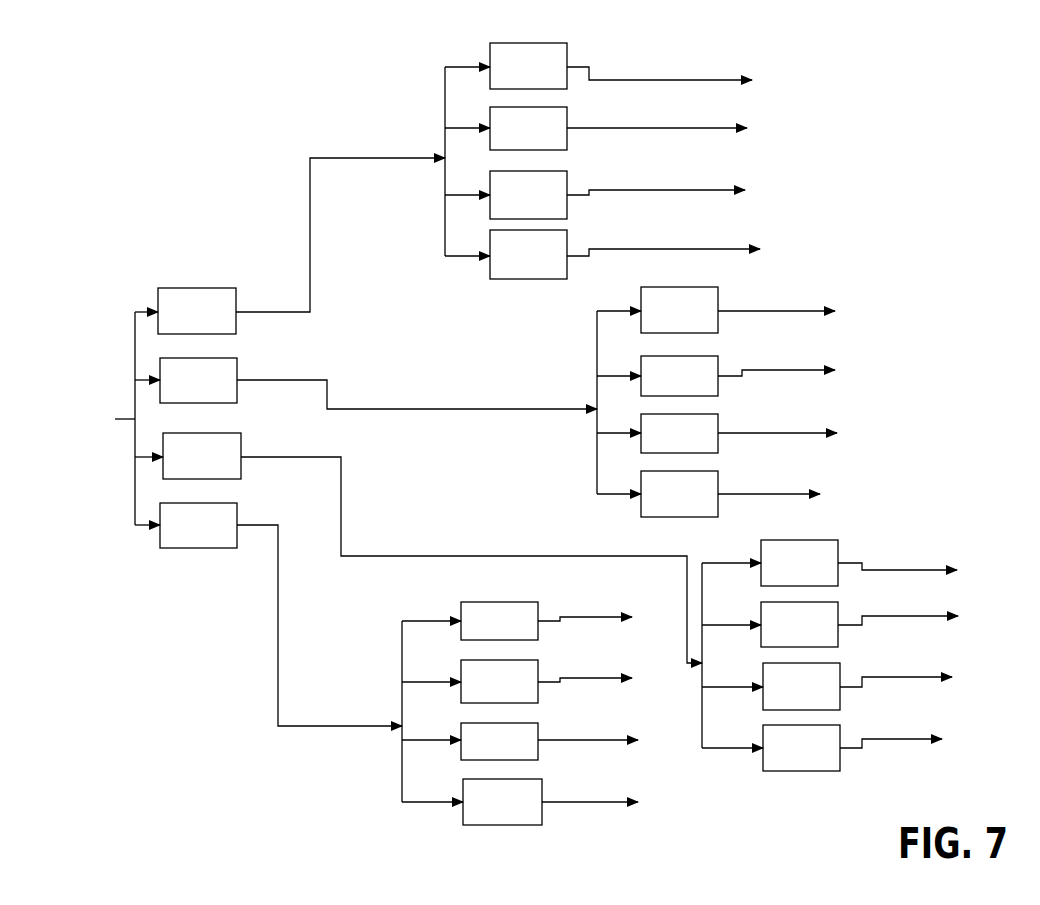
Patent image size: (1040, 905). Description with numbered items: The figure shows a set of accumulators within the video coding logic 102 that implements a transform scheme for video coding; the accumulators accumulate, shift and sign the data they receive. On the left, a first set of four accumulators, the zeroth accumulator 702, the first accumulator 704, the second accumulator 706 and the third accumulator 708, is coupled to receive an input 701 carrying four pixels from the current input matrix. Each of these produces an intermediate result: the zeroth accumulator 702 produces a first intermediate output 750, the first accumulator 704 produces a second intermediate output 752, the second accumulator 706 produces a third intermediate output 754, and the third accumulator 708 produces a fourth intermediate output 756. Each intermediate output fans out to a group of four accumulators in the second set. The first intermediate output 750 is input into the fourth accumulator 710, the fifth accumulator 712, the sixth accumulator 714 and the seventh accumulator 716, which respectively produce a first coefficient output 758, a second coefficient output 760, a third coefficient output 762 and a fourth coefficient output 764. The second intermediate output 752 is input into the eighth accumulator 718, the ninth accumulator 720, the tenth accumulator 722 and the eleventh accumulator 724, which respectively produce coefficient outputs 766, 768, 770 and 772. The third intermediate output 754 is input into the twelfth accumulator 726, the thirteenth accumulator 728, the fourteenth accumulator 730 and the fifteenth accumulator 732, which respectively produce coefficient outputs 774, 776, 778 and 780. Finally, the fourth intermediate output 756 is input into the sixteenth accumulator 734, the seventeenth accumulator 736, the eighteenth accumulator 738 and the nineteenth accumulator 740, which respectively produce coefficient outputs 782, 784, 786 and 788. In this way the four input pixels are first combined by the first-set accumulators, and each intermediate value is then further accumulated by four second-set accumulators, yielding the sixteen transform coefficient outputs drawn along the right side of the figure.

The video coding logic 102 is at (992, 113).
The input 701 is at (80, 334).
The accumulator Acc0 702 is at (203, 288).
The accumulator Acc1 704 is at (200, 357).
The accumulator Acc2 706 is at (205, 433).
The accumulator Acc3 708 is at (200, 548).
The accumulator Acc4 710 is at (527, 43).
The accumulator Acc5 712 is at (533, 107).
The accumulator Acc6 714 is at (533, 171).
The accumulator Acc7 716 is at (530, 280).
The accumulator Acc8 718 is at (681, 287).
The accumulator Acc9 720 is at (683, 356).
The accumulator Acc10 722 is at (683, 414).
The accumulator Acc11 724 is at (683, 517).
The accumulator Acc12 726 is at (800, 540).
The accumulator Acc13 728 is at (800, 602).
The accumulator Acc14 730 is at (803, 663).
The accumulator Acc15 732 is at (805, 771).
The accumulator Acc16 734 is at (500, 602).
The accumulator Acc17 736 is at (502, 660).
The accumulator Acc18 738 is at (502, 723).
The accumulator Acc19 740 is at (508, 825).
The output dm0 750 is at (262, 262).
The output dm1 752 is at (365, 380).
The output dm2 754 is at (383, 522).
The output dm3 756 is at (310, 676).
The output c00 758 is at (777, 63).
The output c10 760 is at (770, 110).
The output c20 762 is at (765, 150).
The output c30 764 is at (780, 222).
The output c01 766 is at (855, 297).
The output c11 768 is at (863, 352).
The output c12 770 is at (865, 410).
The output c13 772 is at (852, 478).
The output c02 774 is at (970, 535).
The output c12 776 is at (973, 593).
The output c22 778 is at (970, 658).
The output c32 780 is at (957, 755).
The output c03 782 is at (626, 596).
The output c13 784 is at (628, 650).
The output c22 786 is at (650, 724).
The output c33 788 is at (662, 810).